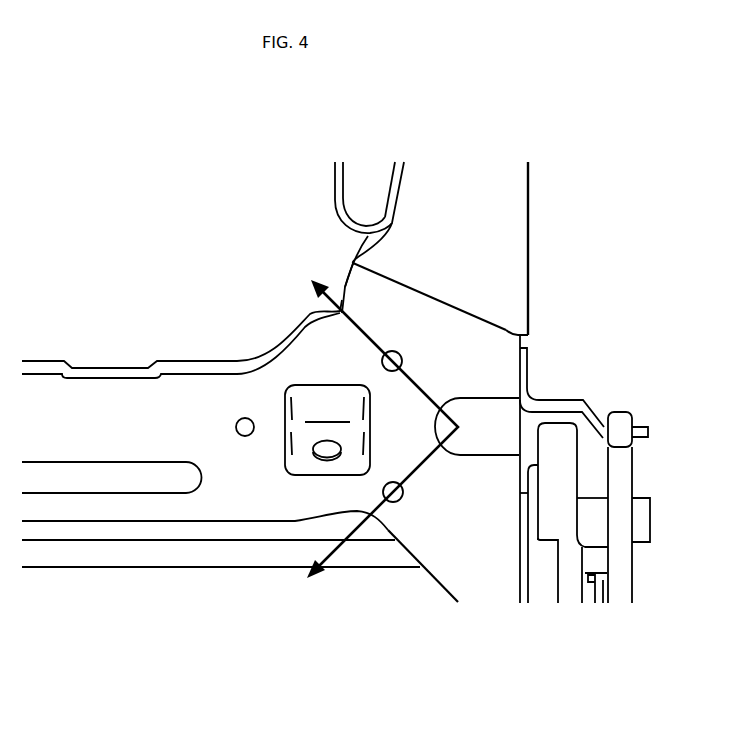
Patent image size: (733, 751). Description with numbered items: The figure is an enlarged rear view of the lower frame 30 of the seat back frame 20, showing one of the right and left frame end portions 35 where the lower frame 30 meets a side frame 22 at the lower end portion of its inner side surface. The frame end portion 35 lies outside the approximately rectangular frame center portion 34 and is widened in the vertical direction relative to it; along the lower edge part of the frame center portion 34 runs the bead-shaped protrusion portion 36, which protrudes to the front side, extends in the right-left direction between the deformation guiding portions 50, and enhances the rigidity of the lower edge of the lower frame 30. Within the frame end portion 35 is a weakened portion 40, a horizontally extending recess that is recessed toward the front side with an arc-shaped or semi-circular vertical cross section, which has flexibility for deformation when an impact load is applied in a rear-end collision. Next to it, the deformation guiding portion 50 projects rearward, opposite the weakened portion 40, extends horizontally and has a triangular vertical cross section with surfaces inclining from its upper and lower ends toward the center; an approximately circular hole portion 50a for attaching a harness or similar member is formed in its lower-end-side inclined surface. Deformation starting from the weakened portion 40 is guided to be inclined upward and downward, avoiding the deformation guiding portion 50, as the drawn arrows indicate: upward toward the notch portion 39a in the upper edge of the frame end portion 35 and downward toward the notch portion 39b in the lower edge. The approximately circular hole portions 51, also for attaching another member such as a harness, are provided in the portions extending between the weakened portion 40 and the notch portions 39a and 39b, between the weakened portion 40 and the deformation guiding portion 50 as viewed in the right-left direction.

The seat back frame 20 is at (524, 131).
The side frame 22 is at (488, 212).
The lower frame 30 is at (153, 312).
The frame center portion 34 is at (58, 400).
The frame end portion 35 is at (453, 325).
The protrusion portion 36 is at (75, 475).
The notch portion 39a is at (338, 297).
The notch portion 39b is at (368, 523).
The weakened portion 40 is at (487, 398).
The deformation guiding portion 50 is at (327, 446).
The hole portion 50a is at (335, 397).
The hole portion 51 is at (393, 372).